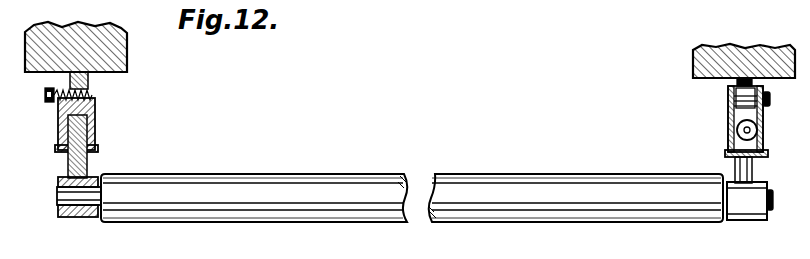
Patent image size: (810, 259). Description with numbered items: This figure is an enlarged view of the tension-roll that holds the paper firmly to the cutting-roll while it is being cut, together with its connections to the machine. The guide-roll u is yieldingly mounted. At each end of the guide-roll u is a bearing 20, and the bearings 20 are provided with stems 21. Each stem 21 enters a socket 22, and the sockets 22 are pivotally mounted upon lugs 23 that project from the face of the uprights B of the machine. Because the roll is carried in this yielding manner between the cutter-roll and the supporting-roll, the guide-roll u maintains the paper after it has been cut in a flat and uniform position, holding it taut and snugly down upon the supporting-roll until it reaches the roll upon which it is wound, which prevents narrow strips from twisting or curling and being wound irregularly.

The uprights B is at (127, 48).
The lugs 23 is at (88, 79).
The sockets 22 is at (95, 106).
The stems 21 is at (88, 160).
The bearings 20 is at (80, 218).
The guide-roll u is at (412, 198).